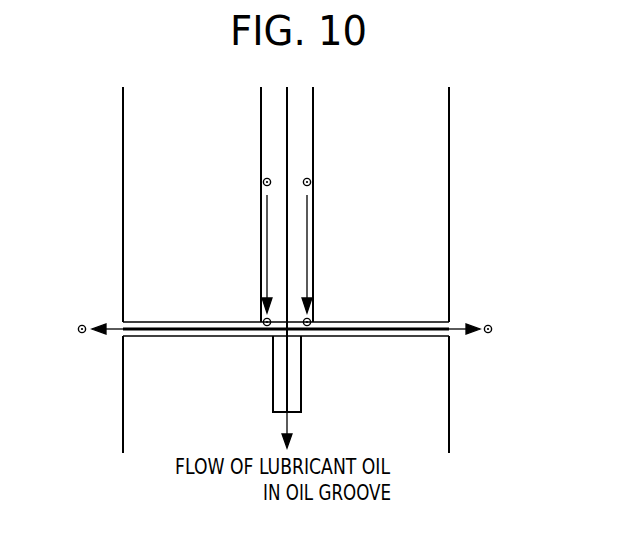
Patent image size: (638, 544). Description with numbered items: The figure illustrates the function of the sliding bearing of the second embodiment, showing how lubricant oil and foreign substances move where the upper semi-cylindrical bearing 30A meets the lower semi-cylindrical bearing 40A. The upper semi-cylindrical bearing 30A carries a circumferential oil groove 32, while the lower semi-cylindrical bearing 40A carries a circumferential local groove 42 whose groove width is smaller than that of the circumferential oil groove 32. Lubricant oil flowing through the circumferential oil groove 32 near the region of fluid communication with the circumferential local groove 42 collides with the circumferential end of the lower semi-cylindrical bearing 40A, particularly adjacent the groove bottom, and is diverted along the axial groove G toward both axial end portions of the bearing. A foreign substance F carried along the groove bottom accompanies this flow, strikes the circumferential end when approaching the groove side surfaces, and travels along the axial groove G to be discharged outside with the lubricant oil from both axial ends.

The upper semi-cylindrical bearing 30A is at (440, 150).
The lower semi-cylindrical bearing 40A is at (438, 410).
The circumferential oil groove 32 is at (308, 120).
The circumferential local groove 42 is at (273, 402).
The axial groove G is at (183, 336).
The foreign substance F is at (262, 182).